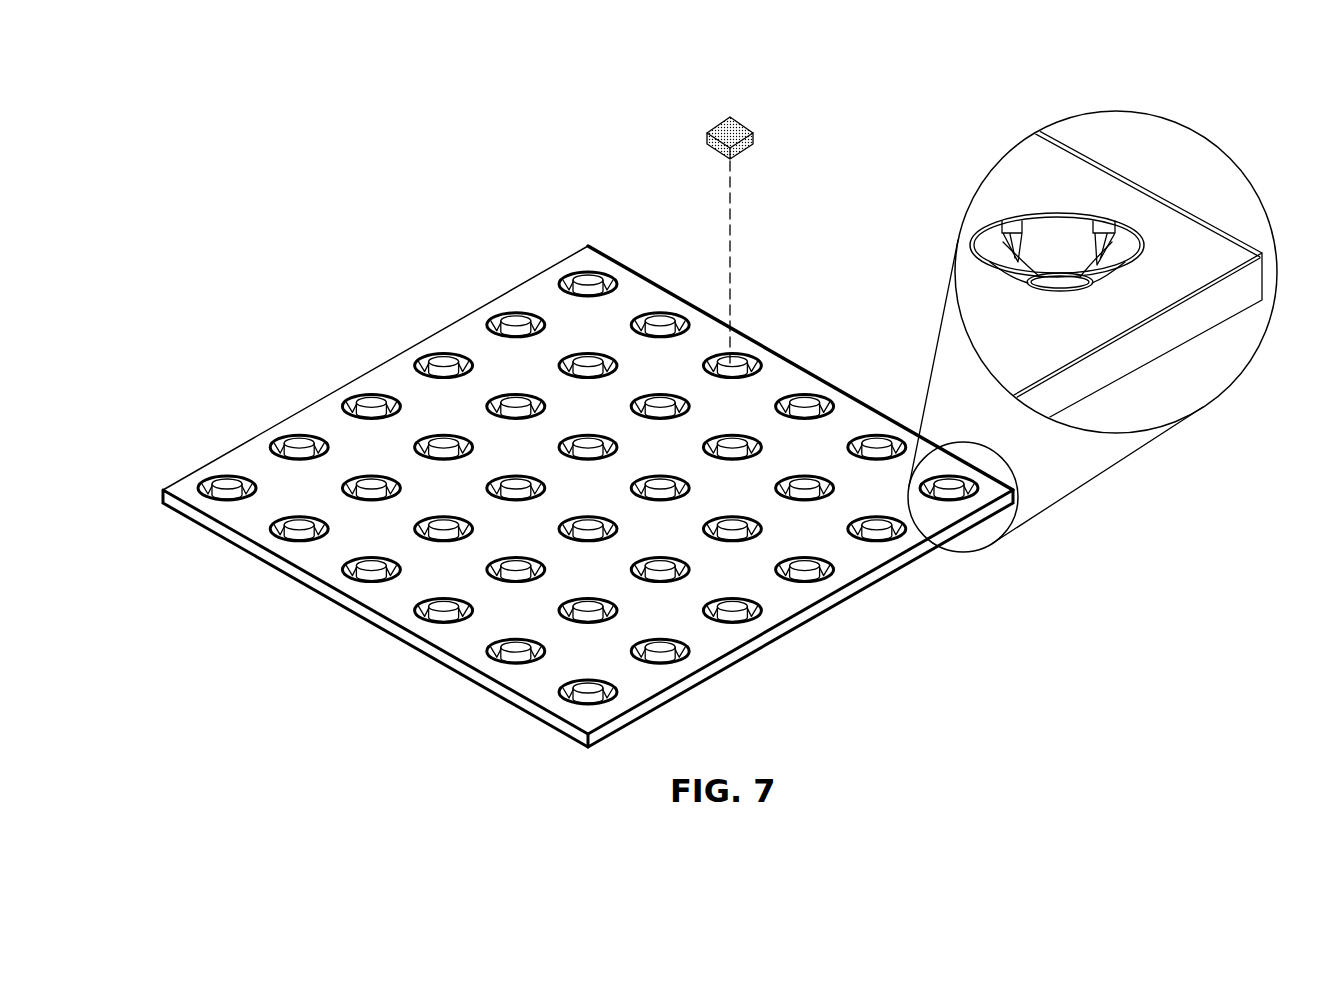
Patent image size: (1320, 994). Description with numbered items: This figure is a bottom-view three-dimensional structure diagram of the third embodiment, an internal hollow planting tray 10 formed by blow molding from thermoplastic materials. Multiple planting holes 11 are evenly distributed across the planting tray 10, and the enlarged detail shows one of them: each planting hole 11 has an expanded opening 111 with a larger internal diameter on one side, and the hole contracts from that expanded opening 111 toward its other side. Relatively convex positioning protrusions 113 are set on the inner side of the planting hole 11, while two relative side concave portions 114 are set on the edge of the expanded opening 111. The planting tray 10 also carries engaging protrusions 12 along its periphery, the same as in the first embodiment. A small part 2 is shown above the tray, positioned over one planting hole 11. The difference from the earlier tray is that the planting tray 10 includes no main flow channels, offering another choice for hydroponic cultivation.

The planting tray 10 is at (399, 370).
The planting hole 11 is at (737, 362).
The expanded opening 111 is at (1057, 223).
The positioning protrusion 113 is at (1067, 270).
The side concave portion 114 is at (988, 253).
The engaging protrusion 12 is at (490, 698).
The chip 2 is at (713, 147).